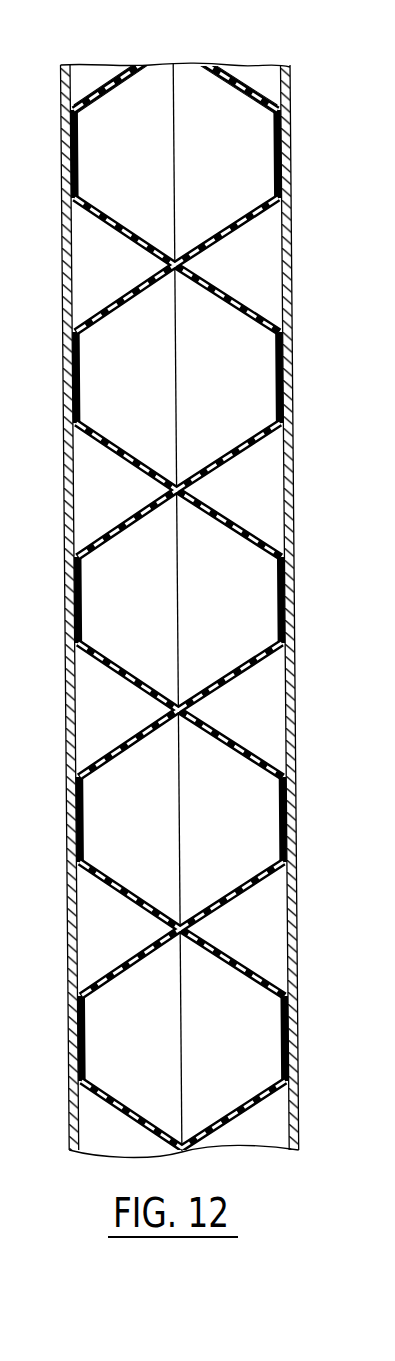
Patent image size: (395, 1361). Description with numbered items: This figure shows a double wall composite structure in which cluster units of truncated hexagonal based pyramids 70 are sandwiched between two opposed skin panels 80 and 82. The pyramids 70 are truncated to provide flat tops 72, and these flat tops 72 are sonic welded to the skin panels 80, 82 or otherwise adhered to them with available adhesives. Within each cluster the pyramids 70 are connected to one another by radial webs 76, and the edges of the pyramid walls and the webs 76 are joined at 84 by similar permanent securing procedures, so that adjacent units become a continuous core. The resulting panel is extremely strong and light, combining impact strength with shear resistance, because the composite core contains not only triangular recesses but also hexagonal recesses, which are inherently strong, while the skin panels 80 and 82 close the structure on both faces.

The hexagonal based pyramids 70 is at (240, 1122).
The flat tops 72 is at (283, 1033).
The radial webs 76 is at (242, 980).
The skin panel 80 is at (65, 730).
The skin panel 82 is at (293, 68).
The joint of pyramid walls and webs 84 is at (183, 1147).